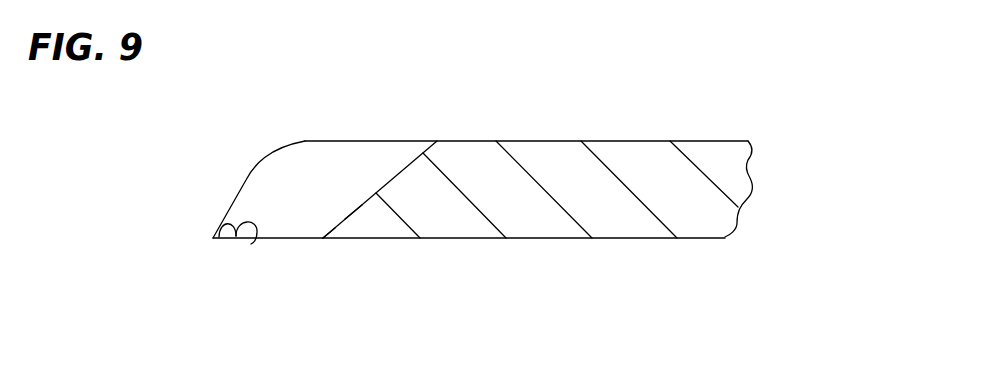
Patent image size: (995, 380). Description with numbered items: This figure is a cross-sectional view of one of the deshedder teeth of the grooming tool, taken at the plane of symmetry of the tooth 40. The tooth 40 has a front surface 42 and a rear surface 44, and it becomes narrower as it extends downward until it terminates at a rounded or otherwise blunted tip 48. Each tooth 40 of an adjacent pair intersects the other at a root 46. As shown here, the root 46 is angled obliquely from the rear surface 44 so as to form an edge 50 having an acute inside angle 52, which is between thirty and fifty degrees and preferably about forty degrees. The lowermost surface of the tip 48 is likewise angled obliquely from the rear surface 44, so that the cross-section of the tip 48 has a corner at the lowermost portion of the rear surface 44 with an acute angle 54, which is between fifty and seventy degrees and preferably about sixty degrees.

The tooth 40 is at (305, 203).
The front surface 42 is at (617, 140).
The rear surface 44 is at (635, 239).
The root 46 is at (398, 173).
The tip 48 is at (237, 196).
The edge 50 is at (323, 238).
The acute inside angle 52 is at (350, 214).
The acute angle 54 is at (251, 244).